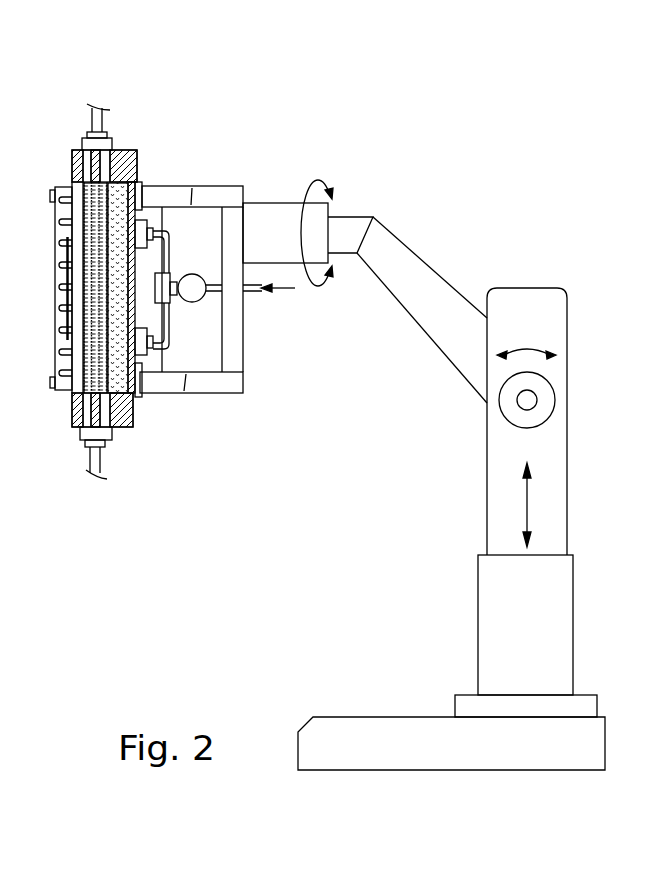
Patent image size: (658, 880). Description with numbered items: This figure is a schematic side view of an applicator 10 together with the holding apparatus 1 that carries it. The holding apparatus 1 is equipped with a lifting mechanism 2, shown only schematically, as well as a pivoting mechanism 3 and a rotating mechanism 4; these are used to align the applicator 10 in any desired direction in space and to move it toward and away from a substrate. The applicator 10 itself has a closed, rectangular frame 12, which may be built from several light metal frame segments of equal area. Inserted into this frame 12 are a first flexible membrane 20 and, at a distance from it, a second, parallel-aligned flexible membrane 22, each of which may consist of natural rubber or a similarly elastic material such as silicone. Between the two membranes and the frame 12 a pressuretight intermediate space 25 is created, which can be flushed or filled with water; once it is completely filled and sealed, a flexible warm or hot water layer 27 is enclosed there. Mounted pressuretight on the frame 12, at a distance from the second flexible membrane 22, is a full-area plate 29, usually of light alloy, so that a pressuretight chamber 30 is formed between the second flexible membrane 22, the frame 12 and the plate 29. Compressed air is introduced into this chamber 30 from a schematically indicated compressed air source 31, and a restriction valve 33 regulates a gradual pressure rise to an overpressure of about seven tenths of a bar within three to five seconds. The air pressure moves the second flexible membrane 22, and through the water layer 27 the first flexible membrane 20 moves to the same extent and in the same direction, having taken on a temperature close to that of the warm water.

The holding apparatus 1 is at (405, 447).
The lifting mechanism 2 is at (527, 503).
The pivoting mechanism 3 is at (530, 346).
The rotating mechanism 4 is at (307, 193).
The applicator 10 is at (202, 98).
The frame 12 is at (122, 153).
The first flexible membrane 20 is at (82, 390).
The second flexible membrane 22 is at (112, 378).
The intermediate space 25 is at (95, 202).
The warm or hot water layer 27 is at (90, 347).
The plate 29 is at (135, 277).
The chamber 30 is at (118, 308).
The compressed air source 31 is at (292, 292).
The restriction valve 33 is at (192, 274).